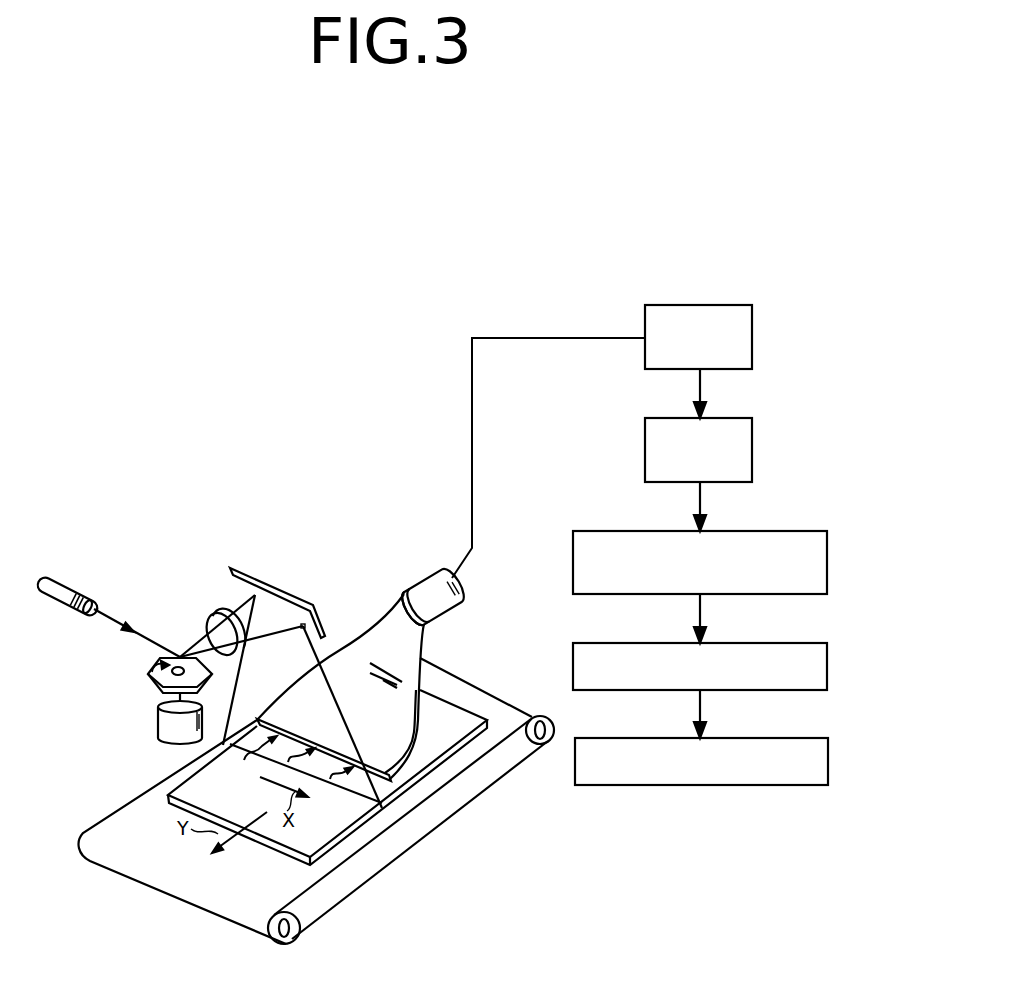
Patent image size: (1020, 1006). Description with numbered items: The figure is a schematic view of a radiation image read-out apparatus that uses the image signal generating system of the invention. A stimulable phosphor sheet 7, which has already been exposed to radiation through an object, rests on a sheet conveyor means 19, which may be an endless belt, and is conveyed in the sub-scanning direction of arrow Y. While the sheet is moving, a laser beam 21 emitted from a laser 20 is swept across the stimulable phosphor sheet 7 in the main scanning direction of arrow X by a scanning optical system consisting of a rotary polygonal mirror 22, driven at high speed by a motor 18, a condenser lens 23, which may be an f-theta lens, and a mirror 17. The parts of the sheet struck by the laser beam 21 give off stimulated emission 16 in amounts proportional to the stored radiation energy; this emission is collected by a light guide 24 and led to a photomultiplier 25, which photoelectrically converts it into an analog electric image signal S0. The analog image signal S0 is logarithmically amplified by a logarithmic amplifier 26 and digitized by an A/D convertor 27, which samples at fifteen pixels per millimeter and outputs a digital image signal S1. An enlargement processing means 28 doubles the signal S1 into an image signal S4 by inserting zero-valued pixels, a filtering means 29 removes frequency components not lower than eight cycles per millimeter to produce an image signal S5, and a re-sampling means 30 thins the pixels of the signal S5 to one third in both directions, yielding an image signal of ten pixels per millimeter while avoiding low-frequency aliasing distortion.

The stimulable phosphor sheet 7 is at (335, 822).
The stimulated emission 16 is at (268, 739).
The mirror 17 is at (265, 582).
The motor 18 is at (158, 732).
The sheet conveyor means 19 is at (295, 882).
The laser 20 is at (69, 588).
The laser beam 21 is at (102, 618).
The rotary polygonal mirror 22 is at (150, 684).
The condenser lens 23 is at (212, 614).
The light guide 24 is at (366, 632).
The photomultiplier 25 is at (420, 575).
The logarithmic amplifier 26 is at (752, 332).
The A/D convertor 27 is at (752, 437).
The enlargement processing means 28 is at (810, 531).
The filtering means 29 is at (808, 643).
The re-sampling means 30 is at (808, 738).
The analog image signal S0 is at (535, 336).
The digital image signal S1 is at (701, 498).
The image signal S4 is at (703, 615).
The image signal S5 is at (703, 712).